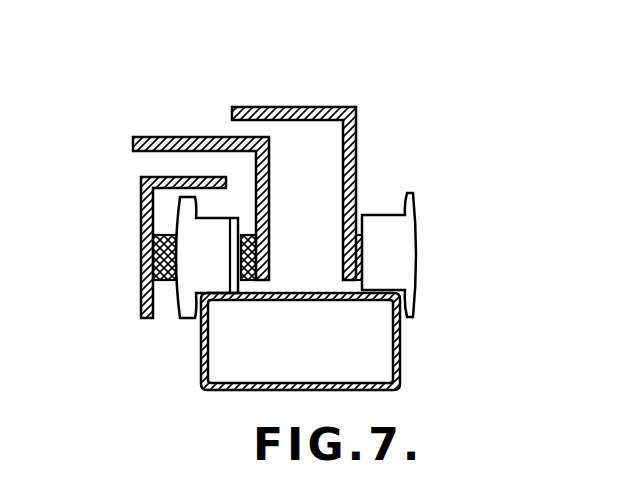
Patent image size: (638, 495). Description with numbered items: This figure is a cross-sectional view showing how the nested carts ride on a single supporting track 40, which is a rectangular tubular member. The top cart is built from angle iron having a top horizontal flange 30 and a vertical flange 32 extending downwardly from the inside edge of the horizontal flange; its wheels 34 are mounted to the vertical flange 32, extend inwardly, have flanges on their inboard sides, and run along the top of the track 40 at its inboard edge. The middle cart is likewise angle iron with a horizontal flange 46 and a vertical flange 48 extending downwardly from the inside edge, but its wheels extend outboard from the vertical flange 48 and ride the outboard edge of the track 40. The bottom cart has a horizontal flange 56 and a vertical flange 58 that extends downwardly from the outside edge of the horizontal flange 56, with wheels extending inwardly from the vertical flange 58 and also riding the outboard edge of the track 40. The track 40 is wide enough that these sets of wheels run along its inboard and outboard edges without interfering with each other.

The top horizontal flange 30 is at (320, 107).
The vertical flange 32 is at (357, 130).
The wheels 34 is at (420, 262).
The track 40 is at (201, 333).
The horizontal flange 46 is at (157, 138).
The vertical flange 48 is at (270, 152).
The horizontal flange 56 is at (167, 177).
The vertical flange 58 is at (141, 198).